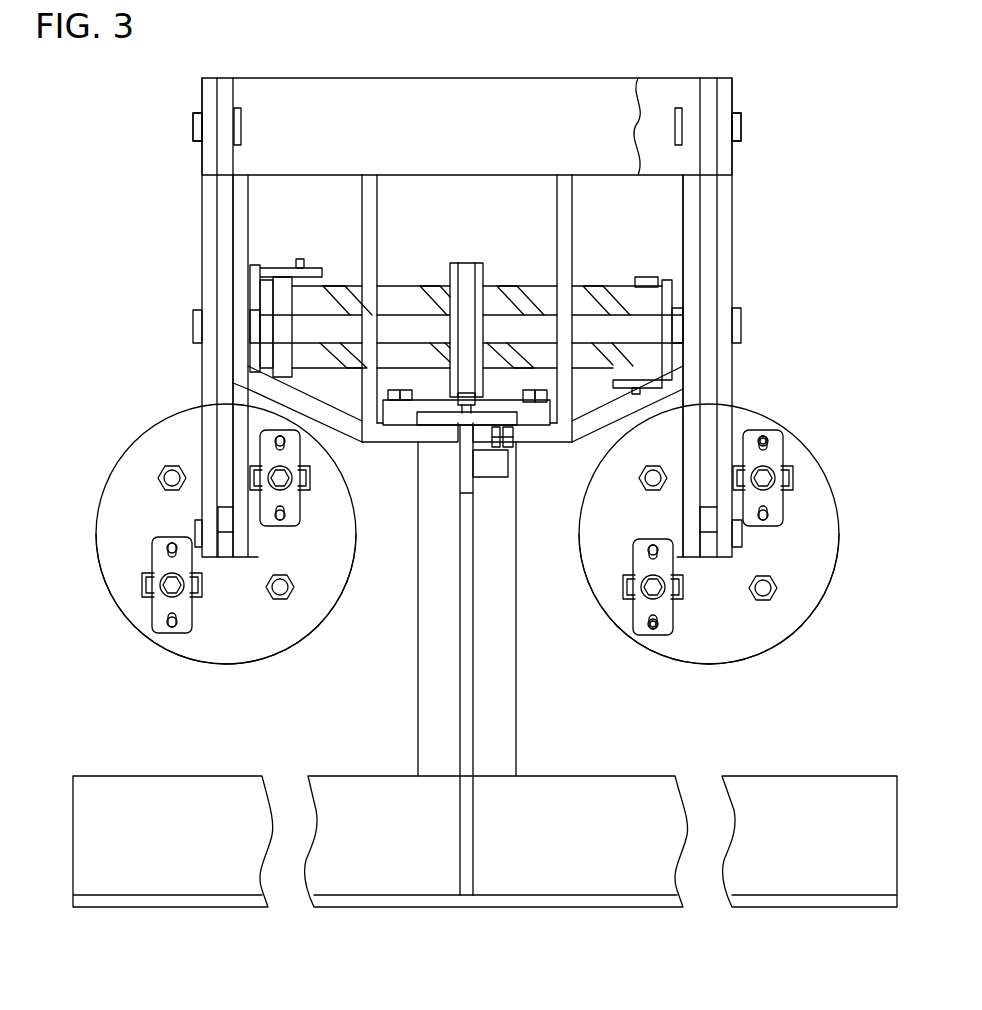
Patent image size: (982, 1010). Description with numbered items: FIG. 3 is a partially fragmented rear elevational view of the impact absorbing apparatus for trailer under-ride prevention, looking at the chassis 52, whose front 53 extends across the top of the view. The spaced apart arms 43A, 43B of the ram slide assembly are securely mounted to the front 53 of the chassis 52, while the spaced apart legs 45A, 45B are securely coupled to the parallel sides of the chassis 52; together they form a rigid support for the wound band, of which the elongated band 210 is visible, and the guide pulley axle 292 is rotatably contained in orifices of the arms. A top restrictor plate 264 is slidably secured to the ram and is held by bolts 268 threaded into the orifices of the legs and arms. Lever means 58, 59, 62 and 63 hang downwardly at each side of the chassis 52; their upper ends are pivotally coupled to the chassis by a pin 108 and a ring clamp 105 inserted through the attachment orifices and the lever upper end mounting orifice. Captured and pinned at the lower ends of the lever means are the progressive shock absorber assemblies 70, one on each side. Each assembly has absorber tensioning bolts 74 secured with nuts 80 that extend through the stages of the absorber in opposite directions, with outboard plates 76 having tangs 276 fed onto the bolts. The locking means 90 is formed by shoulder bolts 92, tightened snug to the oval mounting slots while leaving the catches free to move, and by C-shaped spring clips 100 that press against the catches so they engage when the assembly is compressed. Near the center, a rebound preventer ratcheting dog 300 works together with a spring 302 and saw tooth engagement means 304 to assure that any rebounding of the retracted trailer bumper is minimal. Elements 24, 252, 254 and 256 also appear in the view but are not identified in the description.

The chassis 52 is at (348, 72).
The front of the chassis 53 is at (502, 126).
The ring clamp 105 is at (196, 113).
The pin 108 is at (193, 128).
The lever means 62 is at (202, 216).
The lever means 58 is at (728, 202).
The leg 45B is at (240, 254).
The leg 45A is at (690, 233).
The arm 43B is at (365, 225).
The arm 43A is at (567, 220).
The elongated band 210 is at (337, 285).
The hub 24 is at (470, 262).
The hub fastener nut 254 is at (465, 397).
The top restrictor plate 264 is at (428, 398).
The bolts 268 is at (395, 389).
The guide pulley axle 292 is at (742, 326).
The channel bracket 252 is at (458, 442).
The plate 256 is at (467, 425).
The rebound preventer ratcheting dog 300 is at (495, 458).
The spring 302 is at (500, 433).
The saw tooth engagement means 304 is at (485, 477).
The lever means 63 is at (247, 548).
The lever means 59 is at (690, 488).
The absorber tensioning bolts 74 is at (166, 476).
The nuts 80 is at (290, 589).
The plates 76 is at (278, 640).
The progressive shock absorber assembly 70 is at (163, 664).
The locking means 90 is at (135, 531).
The C-shaped spring clips 100 is at (308, 478).
The shoulder bolts 92 is at (767, 448).
The tangs 276 is at (225, 518).